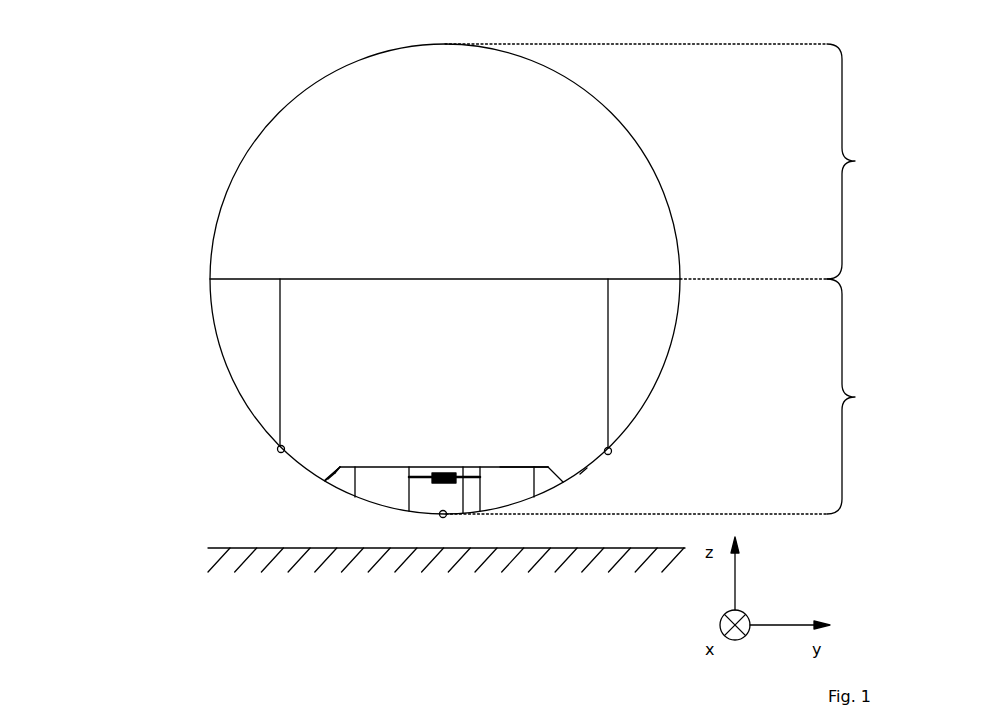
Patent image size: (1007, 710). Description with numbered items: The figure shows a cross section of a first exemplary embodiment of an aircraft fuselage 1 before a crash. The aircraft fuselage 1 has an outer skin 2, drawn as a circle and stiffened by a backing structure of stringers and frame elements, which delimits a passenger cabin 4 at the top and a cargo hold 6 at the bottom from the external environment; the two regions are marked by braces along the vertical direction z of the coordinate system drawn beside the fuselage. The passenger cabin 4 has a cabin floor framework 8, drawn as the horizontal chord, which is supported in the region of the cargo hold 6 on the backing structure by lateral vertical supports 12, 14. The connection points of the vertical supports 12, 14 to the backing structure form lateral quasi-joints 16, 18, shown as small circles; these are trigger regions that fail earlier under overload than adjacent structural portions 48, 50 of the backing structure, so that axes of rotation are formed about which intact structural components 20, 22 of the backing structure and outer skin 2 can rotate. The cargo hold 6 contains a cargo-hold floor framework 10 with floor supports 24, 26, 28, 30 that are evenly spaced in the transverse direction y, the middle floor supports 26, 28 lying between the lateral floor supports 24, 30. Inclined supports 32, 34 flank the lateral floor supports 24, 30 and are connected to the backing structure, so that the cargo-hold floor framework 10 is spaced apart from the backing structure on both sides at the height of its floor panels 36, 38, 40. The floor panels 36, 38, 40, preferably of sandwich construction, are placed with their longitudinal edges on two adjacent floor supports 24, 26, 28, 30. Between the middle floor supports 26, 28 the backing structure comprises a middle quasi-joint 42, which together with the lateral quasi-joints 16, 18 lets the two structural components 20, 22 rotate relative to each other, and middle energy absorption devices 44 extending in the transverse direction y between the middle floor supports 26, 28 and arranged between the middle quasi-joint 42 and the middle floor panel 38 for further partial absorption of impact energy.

The aircraft fuselage 1 is at (49, 30).
The outer skin 2 is at (612, 110).
The passenger cabin 4 is at (852, 161).
The cargo hold 6 is at (853, 396).
The cabin floor framework 8 is at (575, 279).
The cargo-hold floor framework 10 is at (556, 454).
The vertical support 12 is at (280, 332).
The vertical support 14 is at (608, 311).
The lateral quasi-joint 16 is at (278, 448).
The lateral quasi-joint 18 is at (611, 450).
The structural component 20 is at (335, 473).
The structural component 22 is at (587, 468).
The lateral floor support 24 is at (340, 467).
The middle floor support 26 is at (407, 489).
The middle floor support 28 is at (480, 505).
The lateral floor support 30 is at (534, 483).
The inclined support 32 is at (335, 473).
The inclined support 34 is at (548, 467).
The floor panel 36 is at (381, 467).
The middle floor panel 38 is at (465, 510).
The floor panel 40 is at (512, 467).
The middle quasi-joint 42 is at (442, 483).
The middle energy absorption device 44 is at (412, 478).
The adjacent structural portion 48 is at (221, 352).
The adjacent structural portion 50 is at (674, 340).